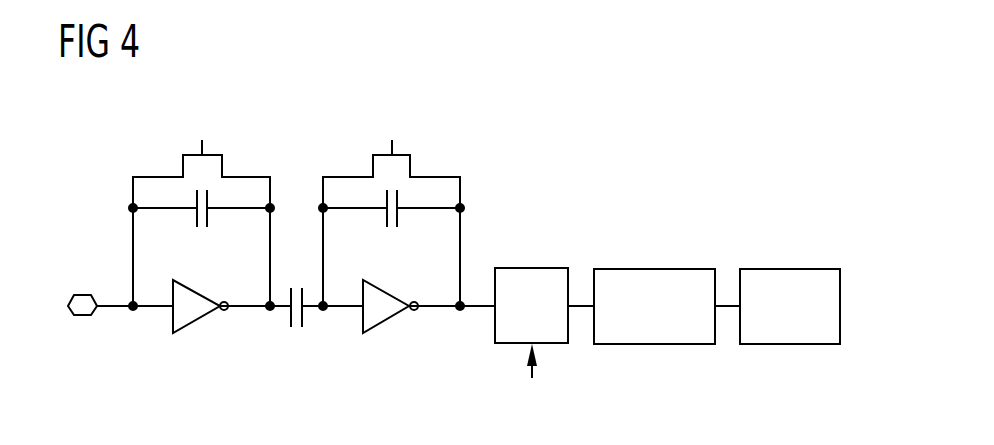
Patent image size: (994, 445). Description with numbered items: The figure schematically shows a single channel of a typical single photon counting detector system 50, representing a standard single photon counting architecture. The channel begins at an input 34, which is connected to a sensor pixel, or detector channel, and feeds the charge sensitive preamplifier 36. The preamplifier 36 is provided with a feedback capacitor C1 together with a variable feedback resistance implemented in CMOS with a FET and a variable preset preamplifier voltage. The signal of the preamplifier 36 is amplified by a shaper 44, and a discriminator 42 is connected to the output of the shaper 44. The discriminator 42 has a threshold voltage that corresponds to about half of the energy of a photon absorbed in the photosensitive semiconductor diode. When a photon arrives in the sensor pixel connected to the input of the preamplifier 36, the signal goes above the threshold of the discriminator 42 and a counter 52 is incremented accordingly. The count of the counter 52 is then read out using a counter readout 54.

The input 34 is at (83, 316).
The charge sensitive preamplifier 36 is at (201, 233).
The feedback capacitor C1 is at (209, 221).
The shaper 44 is at (388, 322).
The discriminator 42 is at (532, 268).
The counter 52 is at (655, 268).
The counter readout 54 is at (790, 268).
The single photon counting detector system 50 is at (712, 141).